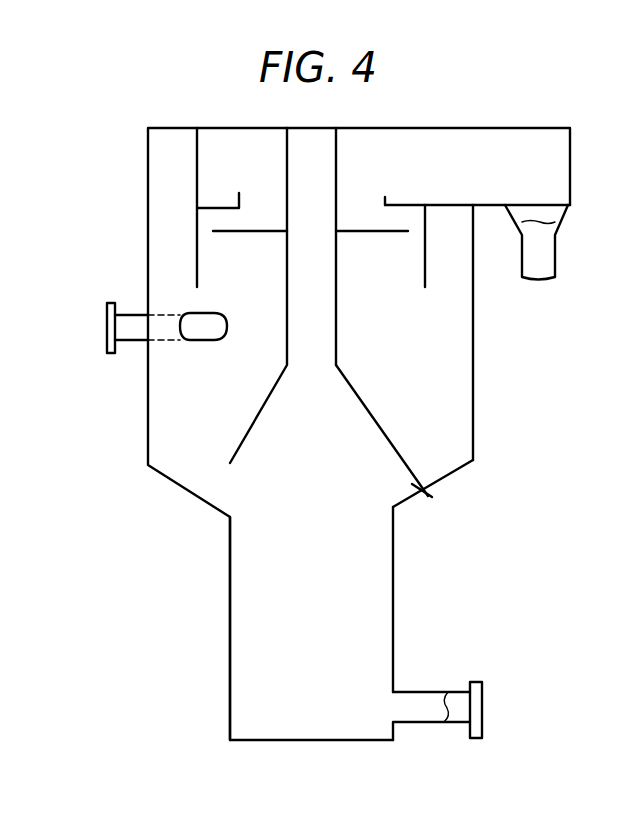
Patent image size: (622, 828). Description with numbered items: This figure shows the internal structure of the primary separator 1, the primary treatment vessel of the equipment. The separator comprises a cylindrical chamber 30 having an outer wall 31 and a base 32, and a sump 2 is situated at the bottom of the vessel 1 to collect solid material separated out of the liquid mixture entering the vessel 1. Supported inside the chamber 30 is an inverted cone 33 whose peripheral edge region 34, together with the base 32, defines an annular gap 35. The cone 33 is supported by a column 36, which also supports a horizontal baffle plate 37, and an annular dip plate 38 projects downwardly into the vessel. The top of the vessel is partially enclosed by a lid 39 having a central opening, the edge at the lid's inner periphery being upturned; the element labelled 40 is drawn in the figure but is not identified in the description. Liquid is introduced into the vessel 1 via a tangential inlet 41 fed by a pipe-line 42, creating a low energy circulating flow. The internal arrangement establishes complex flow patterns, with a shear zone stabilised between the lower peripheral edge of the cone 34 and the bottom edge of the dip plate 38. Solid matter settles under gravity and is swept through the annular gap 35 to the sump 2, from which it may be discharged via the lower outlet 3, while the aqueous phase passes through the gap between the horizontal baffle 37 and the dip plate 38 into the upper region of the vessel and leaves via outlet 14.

The primary separator 1 is at (401, 126).
The sump 2 is at (229, 600).
The outlet 3 is at (463, 712).
The outlet 14 is at (543, 253).
The cylindrical chamber 30 is at (469, 363).
The outer wall 31 is at (478, 330).
The base 32 is at (462, 467).
The inverted cone 33 is at (376, 432).
The peripheral edge region 34 is at (425, 490).
The annular gap 35 is at (386, 485).
The column 36 is at (334, 312).
The horizontal baffle plate 37 is at (392, 233).
The annular dip plate 38 is at (427, 272).
The lid 39 is at (412, 205).
The stub partition 40 is at (238, 193).
The tangential inlet 41 is at (200, 332).
The pipe-line 42 is at (135, 336).